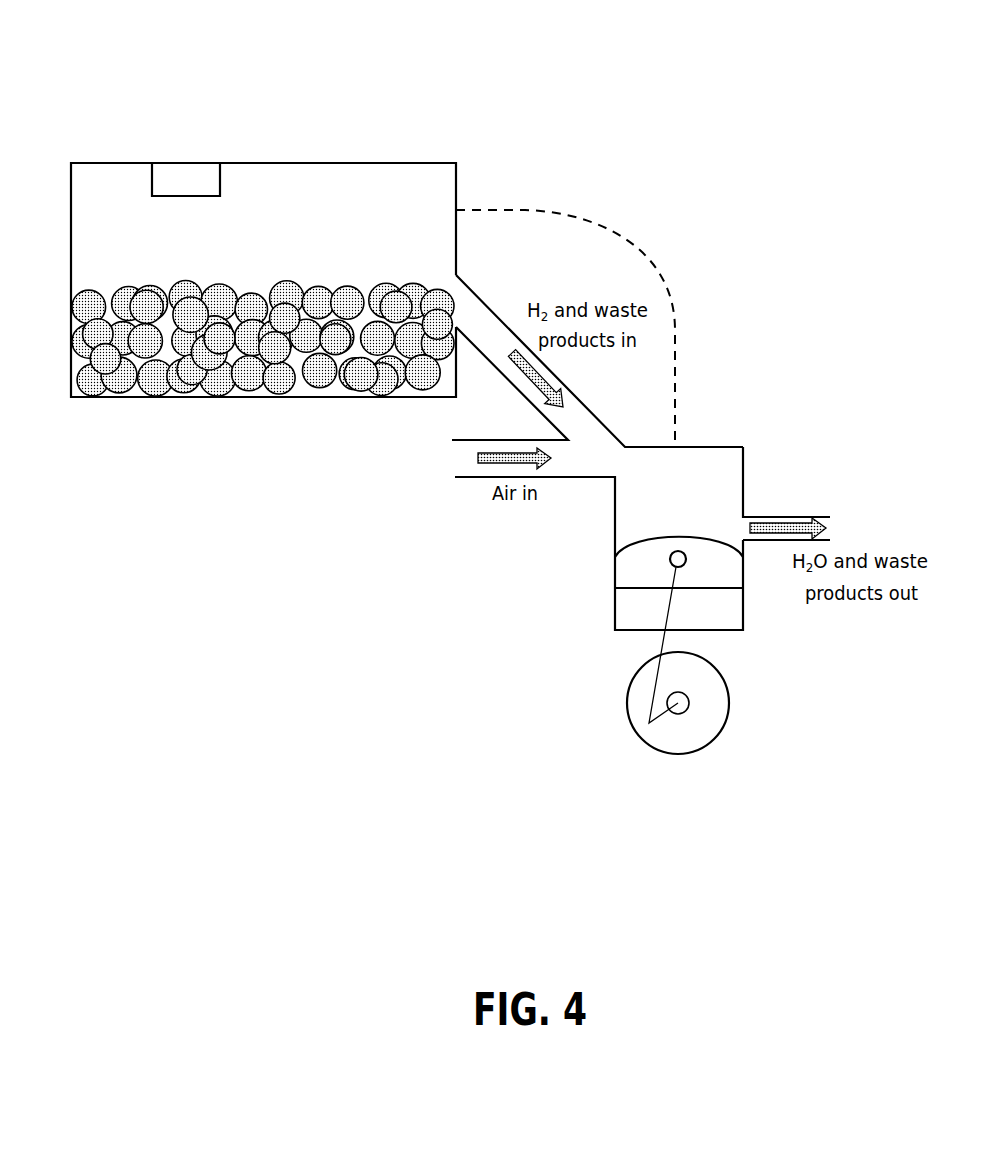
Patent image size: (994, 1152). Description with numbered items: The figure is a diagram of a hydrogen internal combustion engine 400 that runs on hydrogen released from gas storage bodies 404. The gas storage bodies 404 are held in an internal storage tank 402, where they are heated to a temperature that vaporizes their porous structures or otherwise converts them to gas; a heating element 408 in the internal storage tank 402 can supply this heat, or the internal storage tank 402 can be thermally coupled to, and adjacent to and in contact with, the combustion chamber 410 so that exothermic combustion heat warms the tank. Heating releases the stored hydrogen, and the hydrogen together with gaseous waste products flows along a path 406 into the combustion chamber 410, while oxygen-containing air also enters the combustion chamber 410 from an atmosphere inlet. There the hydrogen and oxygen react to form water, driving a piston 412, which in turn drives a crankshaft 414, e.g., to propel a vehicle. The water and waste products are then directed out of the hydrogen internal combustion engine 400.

The hydrogen internal combustion engine 400 is at (476, 89).
The internal storage tank 402 is at (292, 162).
The gas storage bodies 404 is at (89, 291).
The hydrogen and waste flow path 406 is at (527, 212).
The heating element 408 is at (168, 173).
The combustion chamber 410 is at (708, 453).
The piston 412 is at (627, 572).
The crankshaft 414 is at (689, 698).